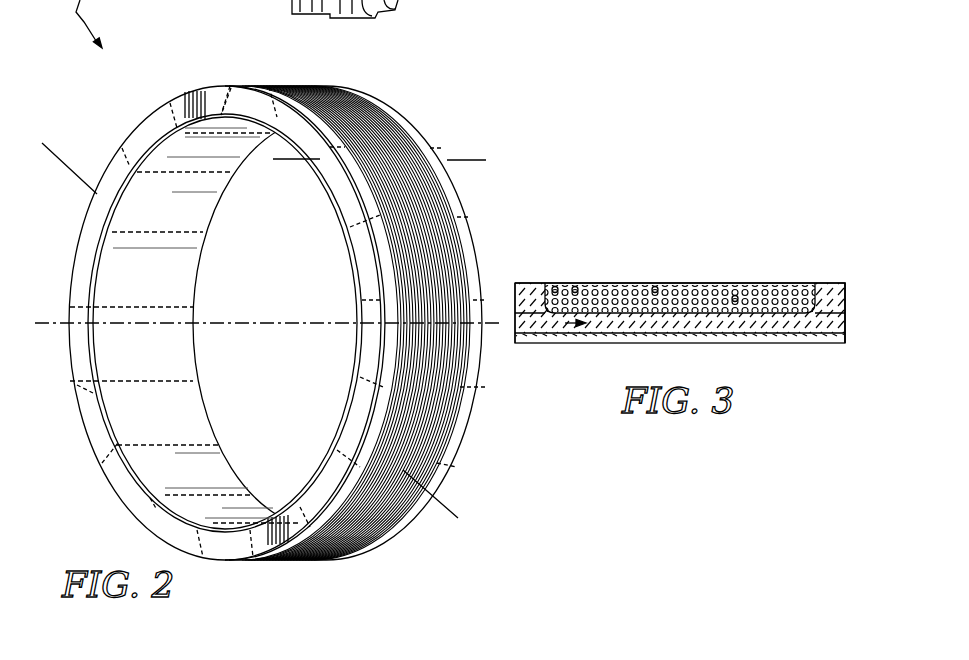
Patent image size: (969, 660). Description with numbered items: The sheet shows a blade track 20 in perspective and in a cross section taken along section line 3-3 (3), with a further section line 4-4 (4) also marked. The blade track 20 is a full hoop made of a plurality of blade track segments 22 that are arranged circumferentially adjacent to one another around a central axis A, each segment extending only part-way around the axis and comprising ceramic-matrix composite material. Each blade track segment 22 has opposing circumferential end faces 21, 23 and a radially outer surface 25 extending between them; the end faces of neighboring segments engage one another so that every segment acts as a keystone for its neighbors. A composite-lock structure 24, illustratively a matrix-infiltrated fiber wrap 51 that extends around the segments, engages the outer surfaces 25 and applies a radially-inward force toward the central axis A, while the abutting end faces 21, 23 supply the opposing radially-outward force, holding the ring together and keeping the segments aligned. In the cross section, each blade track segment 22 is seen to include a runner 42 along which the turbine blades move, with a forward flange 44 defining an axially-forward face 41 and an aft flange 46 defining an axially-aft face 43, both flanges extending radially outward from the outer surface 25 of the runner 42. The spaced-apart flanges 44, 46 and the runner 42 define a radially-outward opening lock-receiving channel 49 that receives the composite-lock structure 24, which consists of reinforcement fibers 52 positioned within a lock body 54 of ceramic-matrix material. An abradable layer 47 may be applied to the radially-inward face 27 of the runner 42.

In FIG. 3, the blade track 20 is at (801, 179).
In FIG. 2, the circumferential end face 21 is at (233, 87).
In FIG. 2, the blade track segment 22 is at (186, 102).
In FIG. 3, the blade track segment 22 is at (854, 298).
In FIG. 2, the circumferential end face 23 is at (268, 84).
In FIG. 2, the composite-lock structure 24 is at (382, 135).
In FIG. 3, the composite-lock structure 24 is at (612, 275).
In FIG. 2, the radially outer surface 25 is at (371, 93).
In FIG. 3, the radially outer surface 25 is at (760, 313).
In FIG. 2, the radially-inward face 27 is at (199, 214).
In FIG. 3, the radially-inward face 27 is at (833, 338).
In FIG. 2, the section line 3- 3 is at (275, 148).
In FIG. 2, the section line 4- 4 is at (96, 165).
In FIG. 2, the axially-forward face 41 is at (88, 220).
In FIG. 3, the axially-forward face 41 is at (516, 315).
In FIG. 3, the runner 42 is at (557, 326).
In FIG. 2, the axially-aft face 43 is at (482, 262).
In FIG. 3, the axially-aft face 43 is at (845, 316).
In FIG. 3, the forward flange 44 is at (527, 292).
In FIG. 3, the aft flange 46 is at (828, 290).
In FIG. 3, the abradable layer 47 is at (738, 339).
In FIG. 3, the lock-receiving channel 49 is at (739, 284).
In FIG. 3, the matrix-infiltrated fiber wrap 51 is at (554, 275).
In FIG. 3, the reinforcement fibers 52 is at (575, 275).
In FIG. 3, the lock body 54 is at (655, 275).
In FIG. 2, the central axis A is at (38, 323).